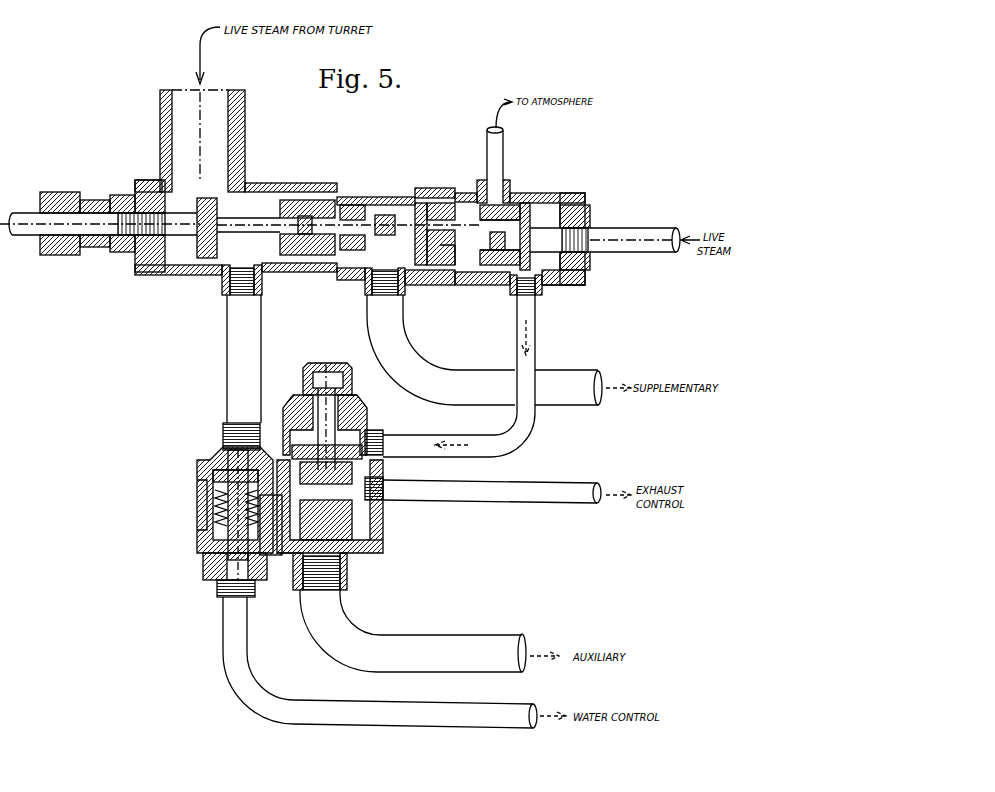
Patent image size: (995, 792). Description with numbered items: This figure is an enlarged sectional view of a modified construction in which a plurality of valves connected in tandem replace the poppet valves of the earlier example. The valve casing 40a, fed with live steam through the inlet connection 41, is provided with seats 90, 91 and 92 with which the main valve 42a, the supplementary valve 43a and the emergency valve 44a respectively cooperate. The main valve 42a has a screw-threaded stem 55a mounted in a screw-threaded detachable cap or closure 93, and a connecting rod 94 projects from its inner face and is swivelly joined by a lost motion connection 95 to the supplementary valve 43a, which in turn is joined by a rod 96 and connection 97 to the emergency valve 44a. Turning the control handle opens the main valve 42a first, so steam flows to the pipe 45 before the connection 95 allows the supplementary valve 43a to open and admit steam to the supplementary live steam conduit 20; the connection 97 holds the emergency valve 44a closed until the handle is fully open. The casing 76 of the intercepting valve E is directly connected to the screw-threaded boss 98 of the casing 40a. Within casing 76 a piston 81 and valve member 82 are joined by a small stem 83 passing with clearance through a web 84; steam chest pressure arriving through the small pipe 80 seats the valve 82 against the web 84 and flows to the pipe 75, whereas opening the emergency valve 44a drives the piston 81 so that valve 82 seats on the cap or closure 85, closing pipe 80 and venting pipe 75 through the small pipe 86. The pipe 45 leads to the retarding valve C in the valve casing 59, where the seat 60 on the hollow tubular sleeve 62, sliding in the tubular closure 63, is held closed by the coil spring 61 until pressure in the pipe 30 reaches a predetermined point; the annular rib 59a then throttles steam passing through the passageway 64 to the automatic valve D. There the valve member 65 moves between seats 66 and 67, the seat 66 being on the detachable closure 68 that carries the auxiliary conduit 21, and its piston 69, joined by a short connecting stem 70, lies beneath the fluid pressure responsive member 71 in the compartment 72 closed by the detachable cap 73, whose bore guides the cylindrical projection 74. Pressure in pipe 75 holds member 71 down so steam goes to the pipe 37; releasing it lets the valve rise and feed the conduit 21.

The supplementary live steam conduit 20 is at (565, 375).
The auxiliary live steam conduit 21 is at (447, 636).
The water control pipe 30 is at (426, 722).
The exhaust steam valve pipe 37 is at (528, 500).
The valve casing 40a is at (290, 188).
The live steam inlet pipe connection 41 is at (240, 106).
The main valve 42a is at (203, 258).
The supplementary valve 43a is at (322, 258).
The emergency valve 44a is at (418, 286).
The pipe 45 is at (225, 364).
The screw-threaded stem 55a is at (96, 222).
The valve casing 59 is at (205, 458).
The annular rib 59a is at (215, 457).
The valve seat 60 is at (212, 478).
The coil spring 61 is at (214, 506).
The hollow tubular sleeve 62 is at (226, 522).
The tubular closure 63 is at (204, 565).
The passageway 64 is at (271, 525).
The valve member 65 is at (295, 570).
The valve seat 66 is at (378, 551).
The valve seat 67 is at (370, 520).
The detachable closure 68 is at (358, 570).
The piston 69 is at (377, 440).
The connecting stem 70 is at (352, 480).
The fluid pressure responsive member 71 is at (362, 446).
The compartment 72 is at (304, 412).
The detachable cap 73 is at (318, 364).
The cylindrical projection 74 is at (348, 404).
The pipe 75 is at (536, 318).
The valve casing 76 is at (534, 196).
The small pipe 80 is at (645, 247).
The piston 81 is at (472, 198).
The valve member 82 is at (583, 272).
The stem 83 is at (498, 222).
The web 84 is at (492, 258).
The cap or closure 85 is at (591, 220).
The small pipe 86 is at (488, 152).
The valve seat 90 is at (228, 282).
The valve seat 91 is at (368, 268).
The valve seat 92 is at (423, 205).
The detachable cap or closure 93 is at (125, 255).
The connecting rod 94 is at (268, 233).
The lost motion connection 95 is at (305, 216).
The rod 96 is at (352, 226).
The lost motion connection 97 is at (388, 222).
The screw-threaded boss 98 is at (460, 286).
The retarding valve C is at (196, 488).
The automatic valve D is at (384, 527).
The intercepting valve E is at (559, 195).